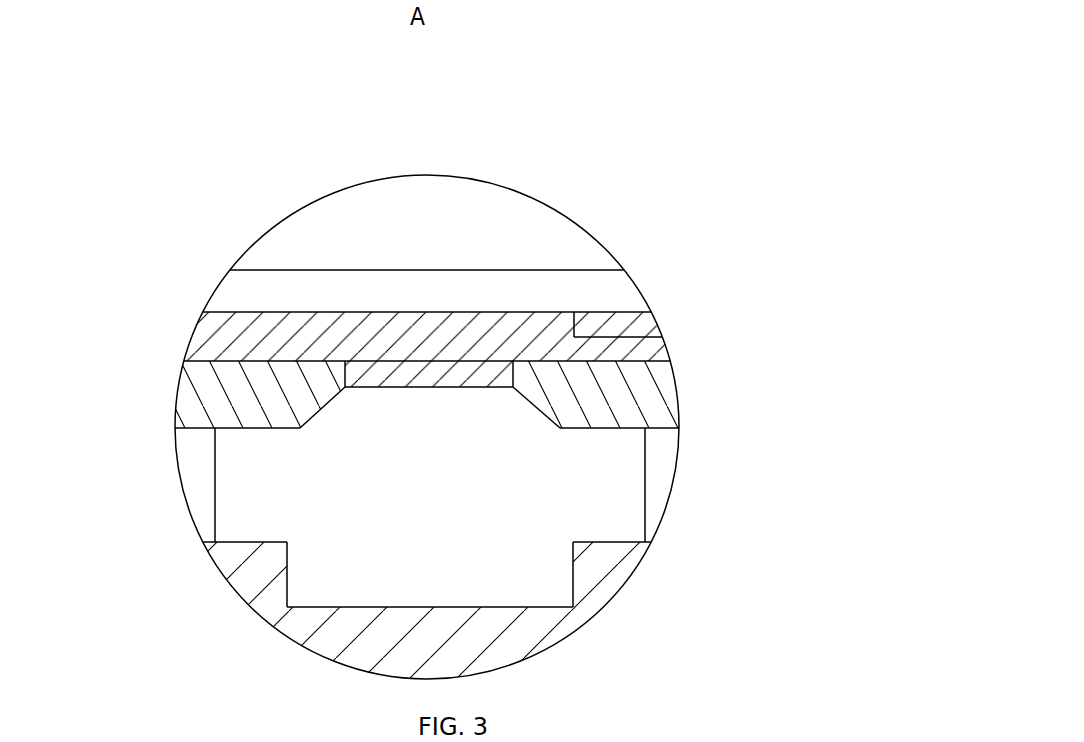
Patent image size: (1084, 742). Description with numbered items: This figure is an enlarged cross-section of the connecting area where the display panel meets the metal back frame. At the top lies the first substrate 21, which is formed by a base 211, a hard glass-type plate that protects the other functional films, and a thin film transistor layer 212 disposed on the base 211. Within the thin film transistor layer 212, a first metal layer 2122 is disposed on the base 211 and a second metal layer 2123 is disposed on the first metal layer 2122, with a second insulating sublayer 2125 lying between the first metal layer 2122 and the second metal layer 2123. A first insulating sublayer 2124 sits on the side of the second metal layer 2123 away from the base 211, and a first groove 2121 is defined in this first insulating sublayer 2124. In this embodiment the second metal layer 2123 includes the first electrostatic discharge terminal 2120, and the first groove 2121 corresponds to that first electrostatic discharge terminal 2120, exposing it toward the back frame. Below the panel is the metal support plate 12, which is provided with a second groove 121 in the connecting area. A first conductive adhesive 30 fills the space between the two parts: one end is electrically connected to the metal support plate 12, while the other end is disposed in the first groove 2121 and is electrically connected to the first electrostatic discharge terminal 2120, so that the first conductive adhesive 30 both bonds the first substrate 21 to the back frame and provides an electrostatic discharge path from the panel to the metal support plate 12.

The first substrate 21 is at (877, 256).
The base 211 is at (622, 283).
The thin film transistor layer 212 is at (792, 305).
The first electrostatic discharge terminal 2120 is at (373, 376).
The first groove 2121 is at (310, 403).
The first metal layer 2122 is at (623, 323).
The second metal layer 2123 is at (532, 374).
The first insulating sublayer 2124 is at (617, 413).
The second insulating sublayer 2125 is at (613, 347).
The first conductive adhesive 30 is at (310, 488).
The metal support plate 12 is at (500, 652).
The second groove 121 is at (271, 582).